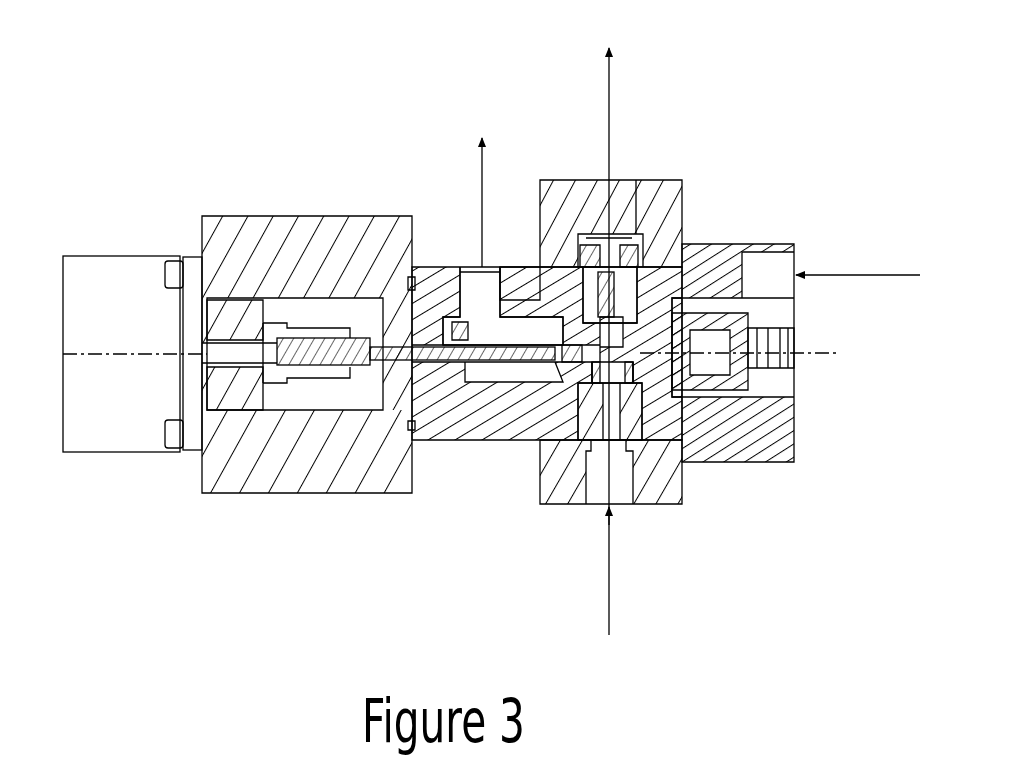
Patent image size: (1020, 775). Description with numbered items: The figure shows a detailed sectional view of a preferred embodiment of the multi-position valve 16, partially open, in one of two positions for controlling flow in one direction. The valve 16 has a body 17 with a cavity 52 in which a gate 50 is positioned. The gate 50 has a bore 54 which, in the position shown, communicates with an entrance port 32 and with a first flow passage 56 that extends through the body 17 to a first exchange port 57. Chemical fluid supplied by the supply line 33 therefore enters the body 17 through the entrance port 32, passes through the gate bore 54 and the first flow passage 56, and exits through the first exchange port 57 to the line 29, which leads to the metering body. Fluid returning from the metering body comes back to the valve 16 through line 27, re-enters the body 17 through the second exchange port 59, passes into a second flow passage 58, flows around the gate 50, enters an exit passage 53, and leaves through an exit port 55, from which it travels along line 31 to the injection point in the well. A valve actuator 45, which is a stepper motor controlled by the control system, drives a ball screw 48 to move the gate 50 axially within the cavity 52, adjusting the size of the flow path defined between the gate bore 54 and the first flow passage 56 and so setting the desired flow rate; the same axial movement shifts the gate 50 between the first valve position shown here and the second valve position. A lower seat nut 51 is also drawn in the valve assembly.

The multi-position valve 16 is at (795, 597).
The body 17 is at (497, 417).
The line 27 is at (868, 275).
The line 29 is at (609, 97).
The line 31 is at (478, 178).
The entrance port 32 is at (610, 507).
The supply line 33 is at (609, 572).
The valve actuator 45 is at (117, 305).
The ball screw 48 is at (310, 335).
The gate 50 is at (690, 292).
The lower seat nut 51 is at (585, 497).
The cavity 52 is at (513, 265).
The exit passage 53 is at (477, 330).
The bore 54 is at (622, 360).
The exit port 55 is at (473, 267).
The first flow passage 56 is at (542, 340).
The first exchange port 57 is at (611, 178).
The second flow passage 58 is at (680, 255).
The second exchange port 59 is at (798, 248).